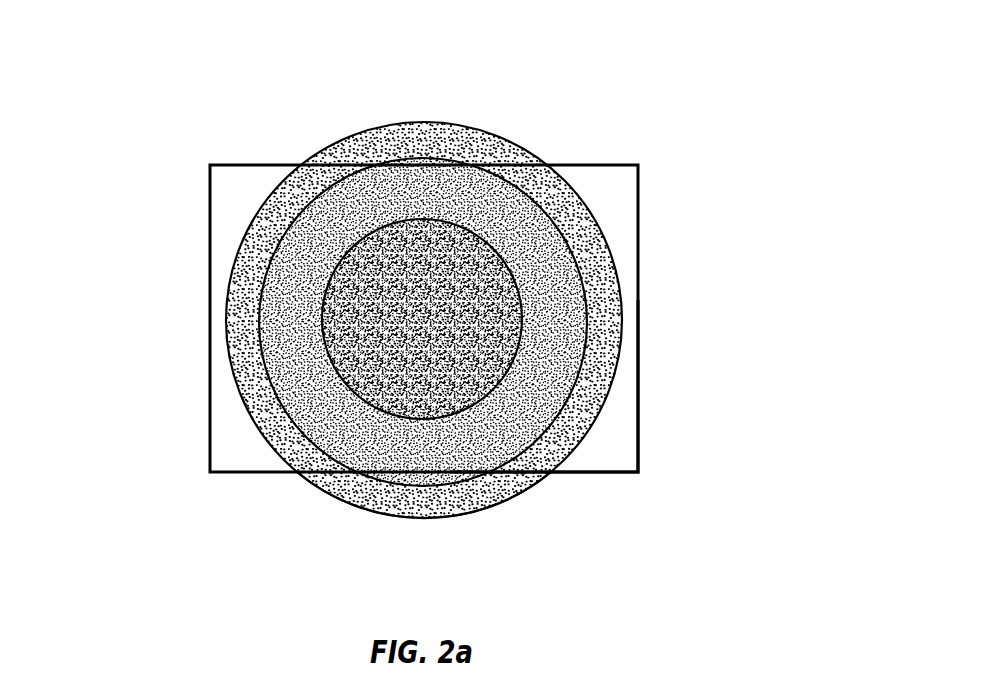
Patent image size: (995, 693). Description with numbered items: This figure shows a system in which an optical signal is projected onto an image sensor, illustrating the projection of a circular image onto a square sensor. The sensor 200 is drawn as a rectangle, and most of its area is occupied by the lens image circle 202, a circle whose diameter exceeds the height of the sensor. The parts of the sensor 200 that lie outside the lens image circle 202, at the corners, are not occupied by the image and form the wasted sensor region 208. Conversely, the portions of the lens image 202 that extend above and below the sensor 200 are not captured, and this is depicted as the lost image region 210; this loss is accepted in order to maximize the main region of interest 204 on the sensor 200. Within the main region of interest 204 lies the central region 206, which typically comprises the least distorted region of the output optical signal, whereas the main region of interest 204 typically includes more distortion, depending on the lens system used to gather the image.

The image sensor 200 is at (232, 208).
The lens image circle 202 is at (352, 133).
The main region of interest 204 is at (490, 190).
The central region 206 is at (427, 330).
The wasted sensor region 208 is at (610, 443).
The lost image region 210 is at (423, 503).